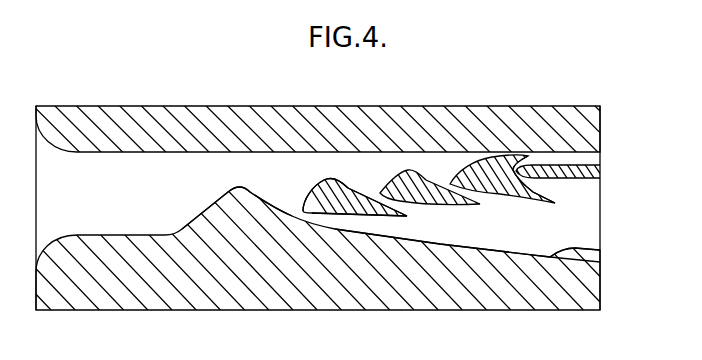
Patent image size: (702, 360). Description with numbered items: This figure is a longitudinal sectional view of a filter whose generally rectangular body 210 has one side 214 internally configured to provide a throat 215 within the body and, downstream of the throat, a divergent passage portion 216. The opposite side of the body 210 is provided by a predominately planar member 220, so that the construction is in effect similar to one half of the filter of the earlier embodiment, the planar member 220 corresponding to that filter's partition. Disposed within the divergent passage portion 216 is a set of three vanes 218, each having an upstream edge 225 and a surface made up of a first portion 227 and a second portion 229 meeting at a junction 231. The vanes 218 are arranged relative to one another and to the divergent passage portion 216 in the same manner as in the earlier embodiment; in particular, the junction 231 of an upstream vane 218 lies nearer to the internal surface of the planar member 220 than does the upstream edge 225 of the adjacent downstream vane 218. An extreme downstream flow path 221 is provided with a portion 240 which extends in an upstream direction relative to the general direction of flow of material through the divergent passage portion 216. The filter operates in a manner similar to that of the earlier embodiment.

The body 210 is at (161, 114).
The side 214 is at (255, 297).
The throat 215 is at (239, 183).
The divergent passage portion 216 is at (600, 255).
The vanes 218 is at (433, 188).
The planar member 220 is at (100, 113).
The extreme downstream flow path 221 is at (548, 190).
The upstream edges 225 is at (302, 206).
The first portion 227 is at (314, 182).
The second portion 229 is at (387, 210).
The junction 231 is at (340, 186).
The portion 240 is at (530, 166).